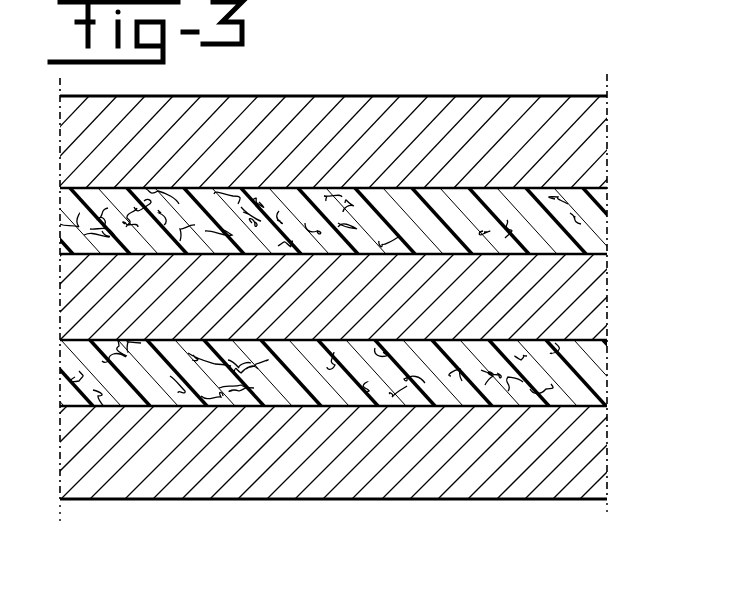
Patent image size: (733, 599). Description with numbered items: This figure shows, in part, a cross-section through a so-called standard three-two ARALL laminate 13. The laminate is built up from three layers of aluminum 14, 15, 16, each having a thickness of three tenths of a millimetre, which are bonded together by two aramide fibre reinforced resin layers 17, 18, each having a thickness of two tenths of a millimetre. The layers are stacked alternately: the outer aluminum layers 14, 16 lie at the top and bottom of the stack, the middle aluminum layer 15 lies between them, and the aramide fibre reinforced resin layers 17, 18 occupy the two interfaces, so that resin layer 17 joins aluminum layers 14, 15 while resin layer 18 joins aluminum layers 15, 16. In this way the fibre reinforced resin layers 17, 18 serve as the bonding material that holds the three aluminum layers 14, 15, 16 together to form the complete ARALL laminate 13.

The standard 3/2 ARALL laminate 13 is at (115, 511).
The aluminum layer 14 is at (597, 144).
The aluminum layer 15 is at (596, 294).
The aluminum layer 16 is at (603, 452).
The aramide fibre reinforced resin layer 17 is at (598, 229).
The aramide fibre reinforced resin layer 18 is at (598, 378).